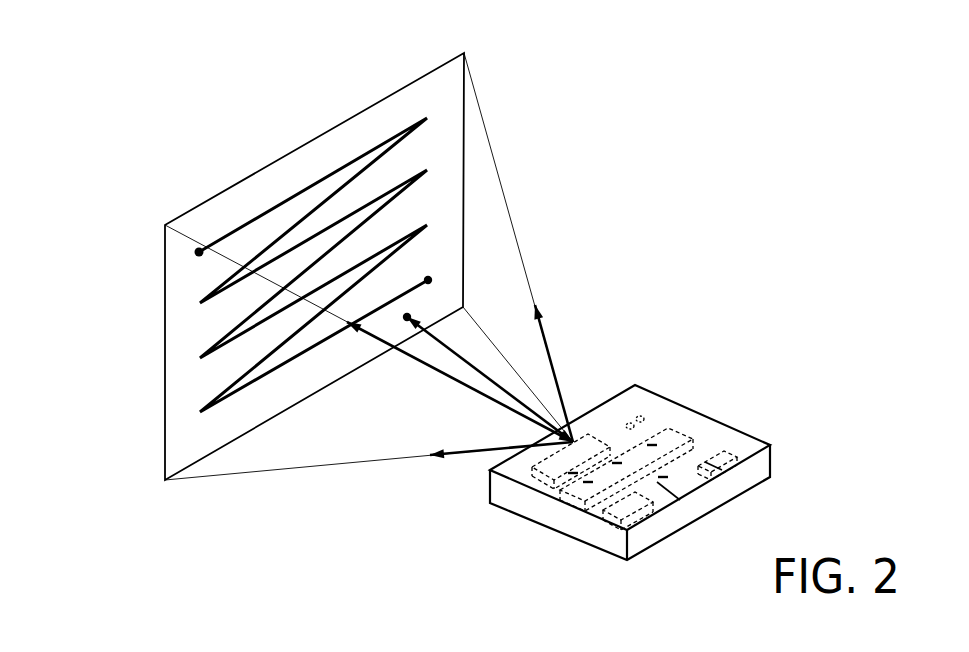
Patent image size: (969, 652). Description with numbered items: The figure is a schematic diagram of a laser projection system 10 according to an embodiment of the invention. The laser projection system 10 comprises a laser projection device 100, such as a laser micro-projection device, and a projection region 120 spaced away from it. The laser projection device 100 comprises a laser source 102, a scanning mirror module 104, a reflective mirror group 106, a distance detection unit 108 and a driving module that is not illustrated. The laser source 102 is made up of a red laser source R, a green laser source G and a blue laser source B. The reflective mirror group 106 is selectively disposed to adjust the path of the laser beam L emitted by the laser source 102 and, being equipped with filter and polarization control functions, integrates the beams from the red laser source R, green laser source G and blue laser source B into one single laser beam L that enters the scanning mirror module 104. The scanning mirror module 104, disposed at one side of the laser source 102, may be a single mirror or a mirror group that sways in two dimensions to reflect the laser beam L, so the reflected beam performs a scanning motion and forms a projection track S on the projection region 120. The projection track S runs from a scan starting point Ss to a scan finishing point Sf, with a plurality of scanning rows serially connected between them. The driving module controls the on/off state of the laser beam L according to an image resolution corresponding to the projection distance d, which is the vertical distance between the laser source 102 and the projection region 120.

The laser projection system 10 is at (53, 75).
The projection region 120 is at (428, 96).
The projection track S is at (294, 196).
The scan starting point Ss is at (199, 252).
The scan finishing point Sf is at (428, 280).
The projection distance d is at (488, 377).
The laser beam L is at (552, 352).
The laser projection device 100 is at (676, 400).
The laser source 102 is at (718, 480).
The scanning mirror module 104 is at (530, 478).
The reflective mirror group 106 is at (568, 493).
The distance detection unit 108 is at (638, 412).
The red laser source R is at (658, 508).
The green laser source G is at (686, 490).
The blue laser source B is at (718, 472).